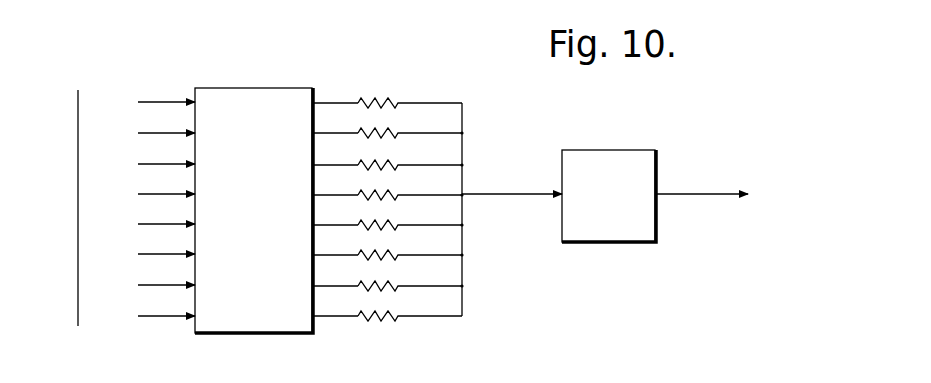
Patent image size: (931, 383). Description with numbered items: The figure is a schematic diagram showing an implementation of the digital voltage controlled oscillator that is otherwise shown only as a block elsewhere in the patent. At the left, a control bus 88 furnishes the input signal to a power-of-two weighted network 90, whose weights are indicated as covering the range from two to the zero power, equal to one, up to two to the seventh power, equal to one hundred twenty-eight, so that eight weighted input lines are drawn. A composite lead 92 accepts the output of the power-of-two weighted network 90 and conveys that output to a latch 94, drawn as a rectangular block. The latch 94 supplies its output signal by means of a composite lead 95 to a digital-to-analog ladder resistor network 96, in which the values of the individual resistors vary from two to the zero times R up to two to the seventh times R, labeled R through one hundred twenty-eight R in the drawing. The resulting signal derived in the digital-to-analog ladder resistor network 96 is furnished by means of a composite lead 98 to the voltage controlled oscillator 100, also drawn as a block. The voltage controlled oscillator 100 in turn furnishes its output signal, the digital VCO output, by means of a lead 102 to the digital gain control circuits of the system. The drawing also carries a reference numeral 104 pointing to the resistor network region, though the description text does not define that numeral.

The control bus 88 is at (78, 100).
The power-of-two weighted network 90 is at (105, 87).
The composite lead 92 is at (157, 101).
The latch 94 is at (251, 94).
The composite lead 95 is at (338, 103).
The digital-to-analog ladder resistor network 96 is at (421, 92).
The composite lead 98 is at (511, 194).
The voltage controlled oscillator 100 is at (652, 157).
The lead 102 is at (695, 196).
The resistor network (digital to analog converter) 104 is at (388, 166).